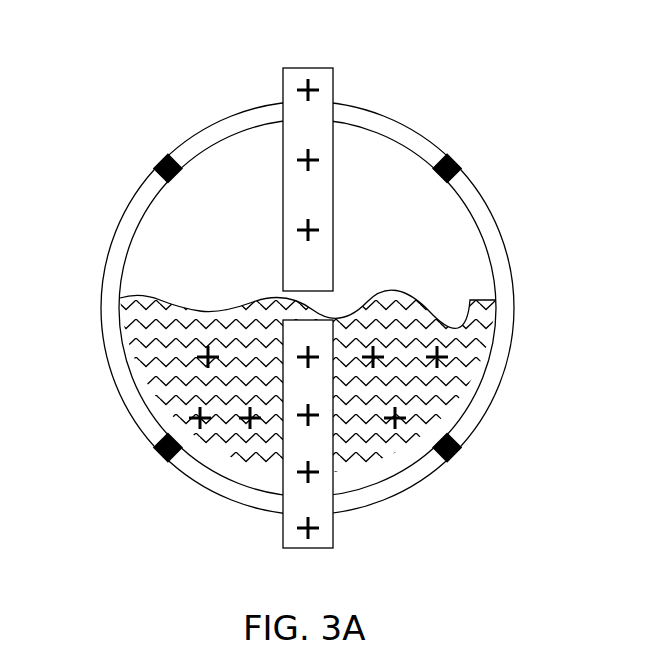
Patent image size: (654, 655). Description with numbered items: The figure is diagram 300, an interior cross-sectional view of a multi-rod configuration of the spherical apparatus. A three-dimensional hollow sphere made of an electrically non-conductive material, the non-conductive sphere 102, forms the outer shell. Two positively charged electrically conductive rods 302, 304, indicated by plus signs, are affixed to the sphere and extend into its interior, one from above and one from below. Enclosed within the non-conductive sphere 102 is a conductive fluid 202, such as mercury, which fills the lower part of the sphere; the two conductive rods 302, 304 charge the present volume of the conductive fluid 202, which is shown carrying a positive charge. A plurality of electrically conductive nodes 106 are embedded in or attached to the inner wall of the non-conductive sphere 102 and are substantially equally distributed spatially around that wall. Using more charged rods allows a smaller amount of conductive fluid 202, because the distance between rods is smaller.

The non-conductive sphere 102 is at (512, 262).
The electrically conductive nodes 106 is at (160, 158).
The conductive fluid 202 is at (133, 353).
The diagram 300 is at (515, 52).
The electrically conductive rod 302 is at (308, 68).
The electrically conductive rod 304 is at (308, 548).